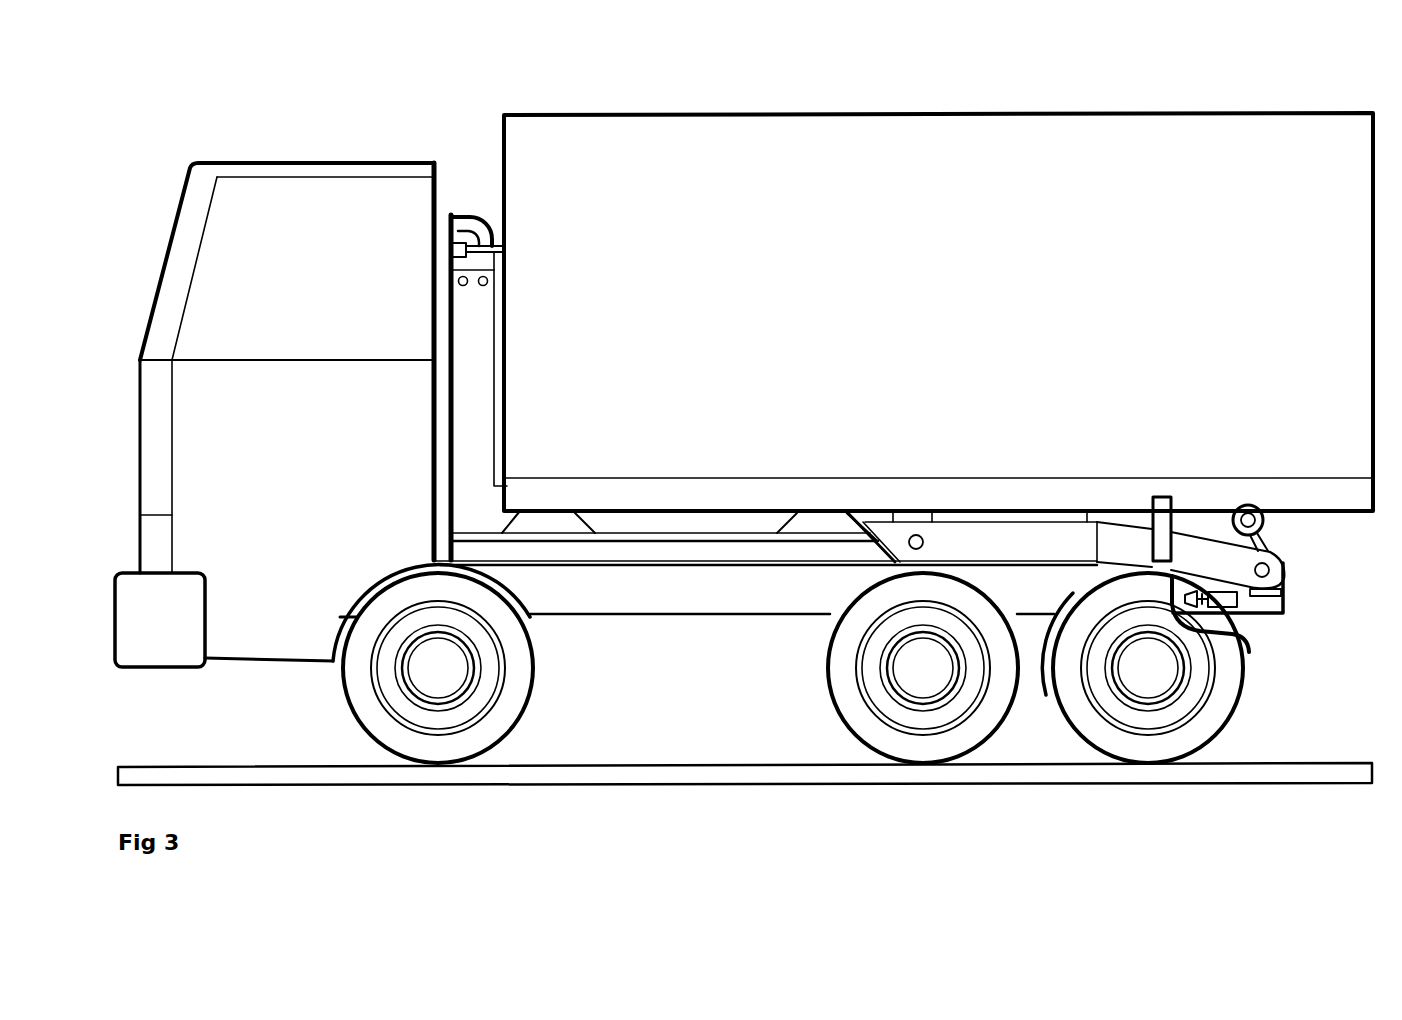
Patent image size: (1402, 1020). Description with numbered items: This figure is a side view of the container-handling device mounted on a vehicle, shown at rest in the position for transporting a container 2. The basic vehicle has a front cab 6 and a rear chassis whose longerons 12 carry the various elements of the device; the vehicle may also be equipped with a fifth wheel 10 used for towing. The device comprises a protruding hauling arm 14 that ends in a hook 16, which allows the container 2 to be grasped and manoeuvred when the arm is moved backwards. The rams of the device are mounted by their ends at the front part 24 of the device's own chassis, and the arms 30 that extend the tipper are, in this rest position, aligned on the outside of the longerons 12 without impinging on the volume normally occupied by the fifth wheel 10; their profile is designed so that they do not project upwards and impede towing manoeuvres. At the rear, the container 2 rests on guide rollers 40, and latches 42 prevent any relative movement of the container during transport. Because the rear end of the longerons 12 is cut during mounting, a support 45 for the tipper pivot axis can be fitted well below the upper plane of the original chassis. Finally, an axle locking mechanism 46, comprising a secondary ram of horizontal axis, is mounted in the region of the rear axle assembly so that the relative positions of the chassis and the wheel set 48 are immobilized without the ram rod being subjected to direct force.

The container 2 is at (957, 112).
The front cab 6 is at (316, 162).
The fifth wheel 10 is at (1029, 497).
The longerons 12 is at (765, 587).
The hauling arm 14 is at (506, 390).
The hook 16 is at (474, 216).
The front part of the chassis of the device 24 is at (728, 532).
The arms 30 is at (1036, 555).
The guide rollers 40 is at (1268, 527).
The latches 42 is at (1175, 512).
The support 45 is at (1288, 582).
The axle locking mechanism 46 is at (1251, 624).
The wheel set 48 is at (1162, 773).